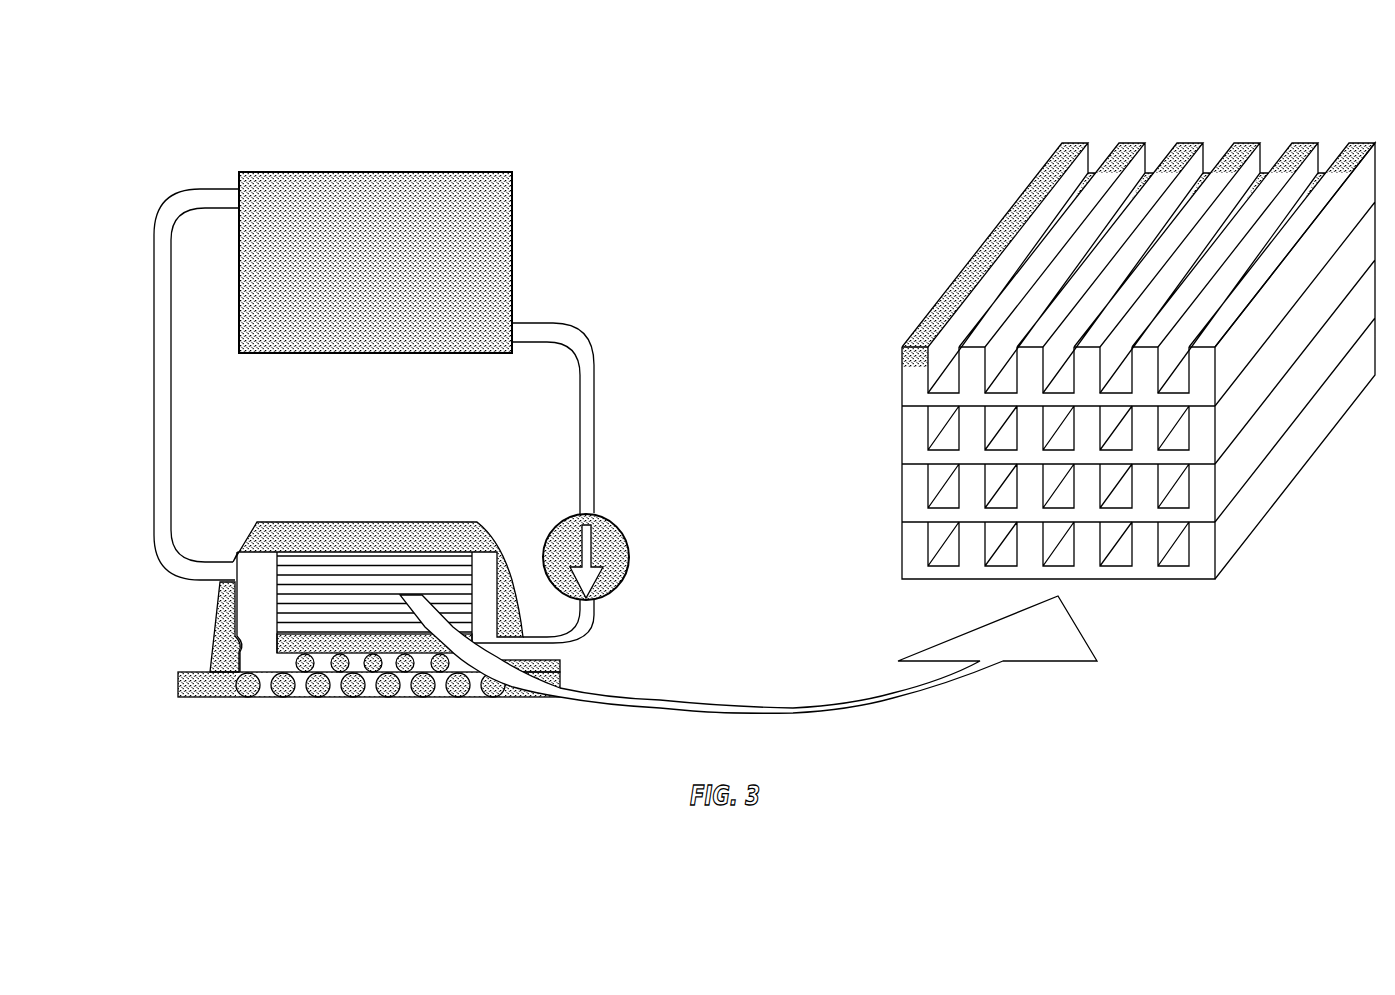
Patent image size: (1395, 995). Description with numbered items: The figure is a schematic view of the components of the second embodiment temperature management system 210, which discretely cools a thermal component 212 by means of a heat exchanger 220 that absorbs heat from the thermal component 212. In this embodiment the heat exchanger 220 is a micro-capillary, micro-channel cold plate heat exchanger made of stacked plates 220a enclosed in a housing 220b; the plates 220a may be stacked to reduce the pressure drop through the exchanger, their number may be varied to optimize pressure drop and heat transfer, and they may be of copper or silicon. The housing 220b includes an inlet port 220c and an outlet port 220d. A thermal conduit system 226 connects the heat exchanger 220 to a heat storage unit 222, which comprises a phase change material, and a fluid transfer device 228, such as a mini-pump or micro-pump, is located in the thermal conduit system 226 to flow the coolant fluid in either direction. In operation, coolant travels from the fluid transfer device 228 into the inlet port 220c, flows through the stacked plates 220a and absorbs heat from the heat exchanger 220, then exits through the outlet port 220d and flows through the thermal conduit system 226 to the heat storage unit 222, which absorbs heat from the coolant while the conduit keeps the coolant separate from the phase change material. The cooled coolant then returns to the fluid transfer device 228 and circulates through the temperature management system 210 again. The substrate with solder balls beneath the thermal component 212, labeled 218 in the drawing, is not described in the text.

The temperature management system 210 is at (540, 168).
The thermal component 212 is at (270, 652).
The substrate with solder balls 218 is at (462, 700).
The heat exchanger 220 is at (322, 563).
The stacked plates 220a is at (902, 373).
The housing 220b is at (417, 528).
The inlet port 220c is at (523, 652).
The outlet port 220d is at (232, 573).
The heat storage unit 222 is at (377, 172).
The thermal conduit system 226 is at (154, 322).
The fluid transfer device 228 is at (628, 557).